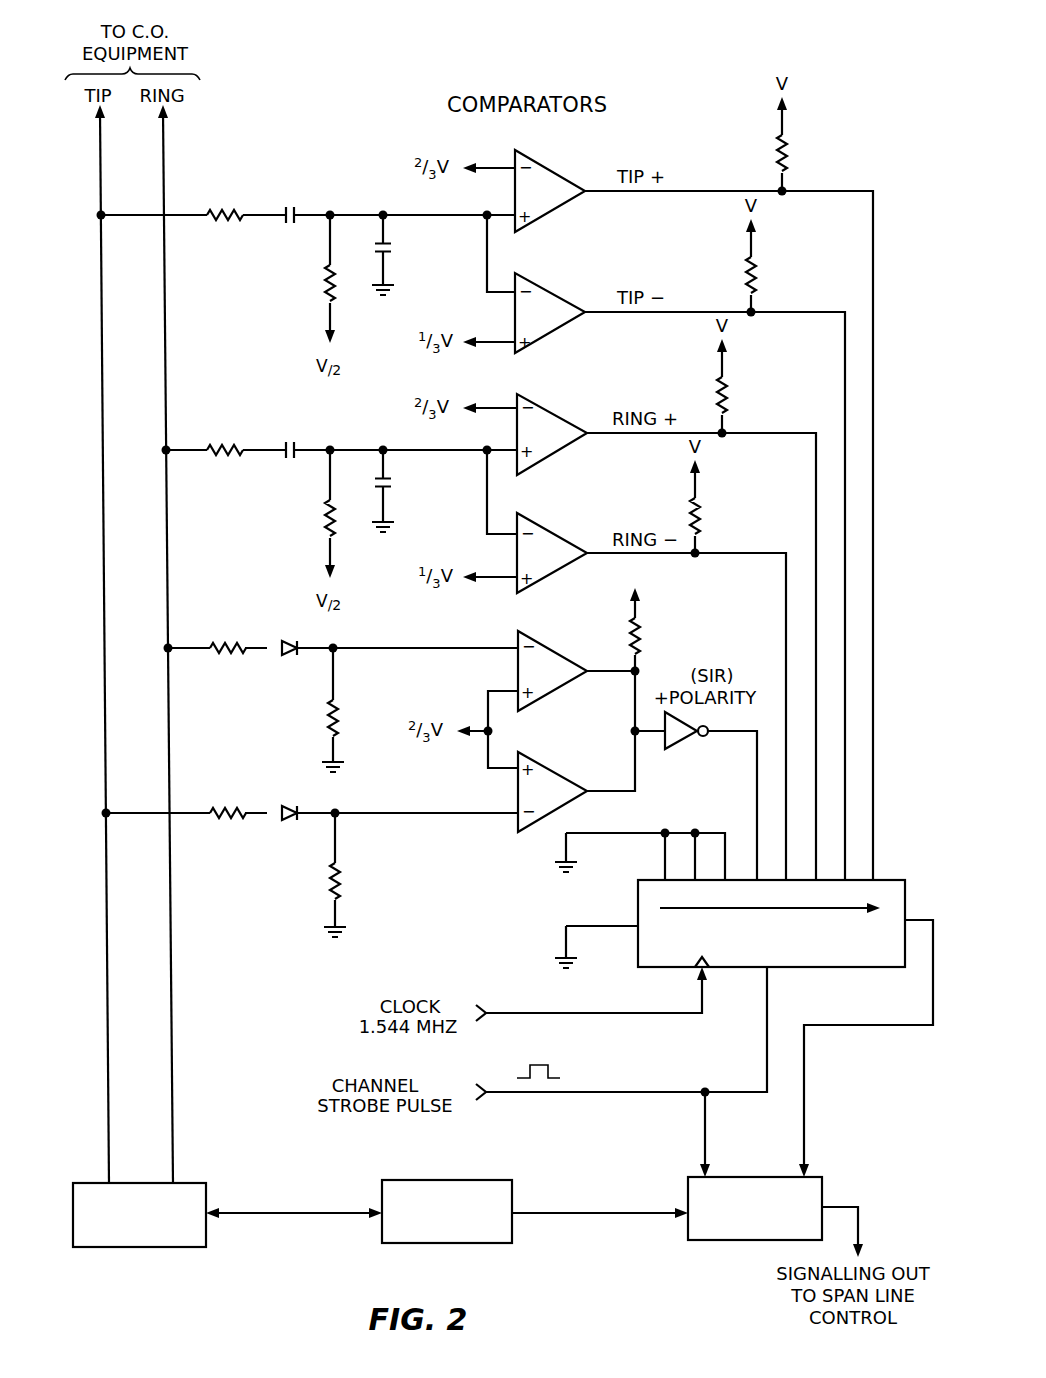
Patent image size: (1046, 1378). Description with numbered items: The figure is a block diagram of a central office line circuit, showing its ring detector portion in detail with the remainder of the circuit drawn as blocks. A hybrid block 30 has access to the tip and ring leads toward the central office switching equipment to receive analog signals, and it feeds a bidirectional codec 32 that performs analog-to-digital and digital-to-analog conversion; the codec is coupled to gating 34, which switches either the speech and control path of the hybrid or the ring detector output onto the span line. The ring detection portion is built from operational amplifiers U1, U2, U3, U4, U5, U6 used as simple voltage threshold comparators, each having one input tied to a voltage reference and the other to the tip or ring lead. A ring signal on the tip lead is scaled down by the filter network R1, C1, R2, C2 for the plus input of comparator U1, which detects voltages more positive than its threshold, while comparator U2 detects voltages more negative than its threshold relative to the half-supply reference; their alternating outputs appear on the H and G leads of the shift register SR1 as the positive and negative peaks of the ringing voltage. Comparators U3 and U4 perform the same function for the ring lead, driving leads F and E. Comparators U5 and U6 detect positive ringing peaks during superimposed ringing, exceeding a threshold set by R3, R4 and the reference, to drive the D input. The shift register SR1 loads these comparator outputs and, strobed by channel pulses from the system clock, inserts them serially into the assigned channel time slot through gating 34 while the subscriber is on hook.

The hybrid block 30 is at (187, 1183).
The bidirectional codec 32 is at (432, 1180).
The gating 34 is at (822, 1188).
The shift register SR1 is at (885, 880).
The comparator U1 is at (550, 191).
The comparator U2 is at (550, 313).
The comparator U3 is at (552, 434).
The comparator U4 is at (552, 553).
The comparator U5 is at (552, 671).
The comparator U6 is at (552, 792).
The resistor R1 is at (225, 349).
The resistor R2 is at (314, 396).
The resistor R3 is at (228, 746).
The resistor R4 is at (321, 792).
The capacitor C1 is at (290, 321).
The capacitor C2 is at (393, 373).